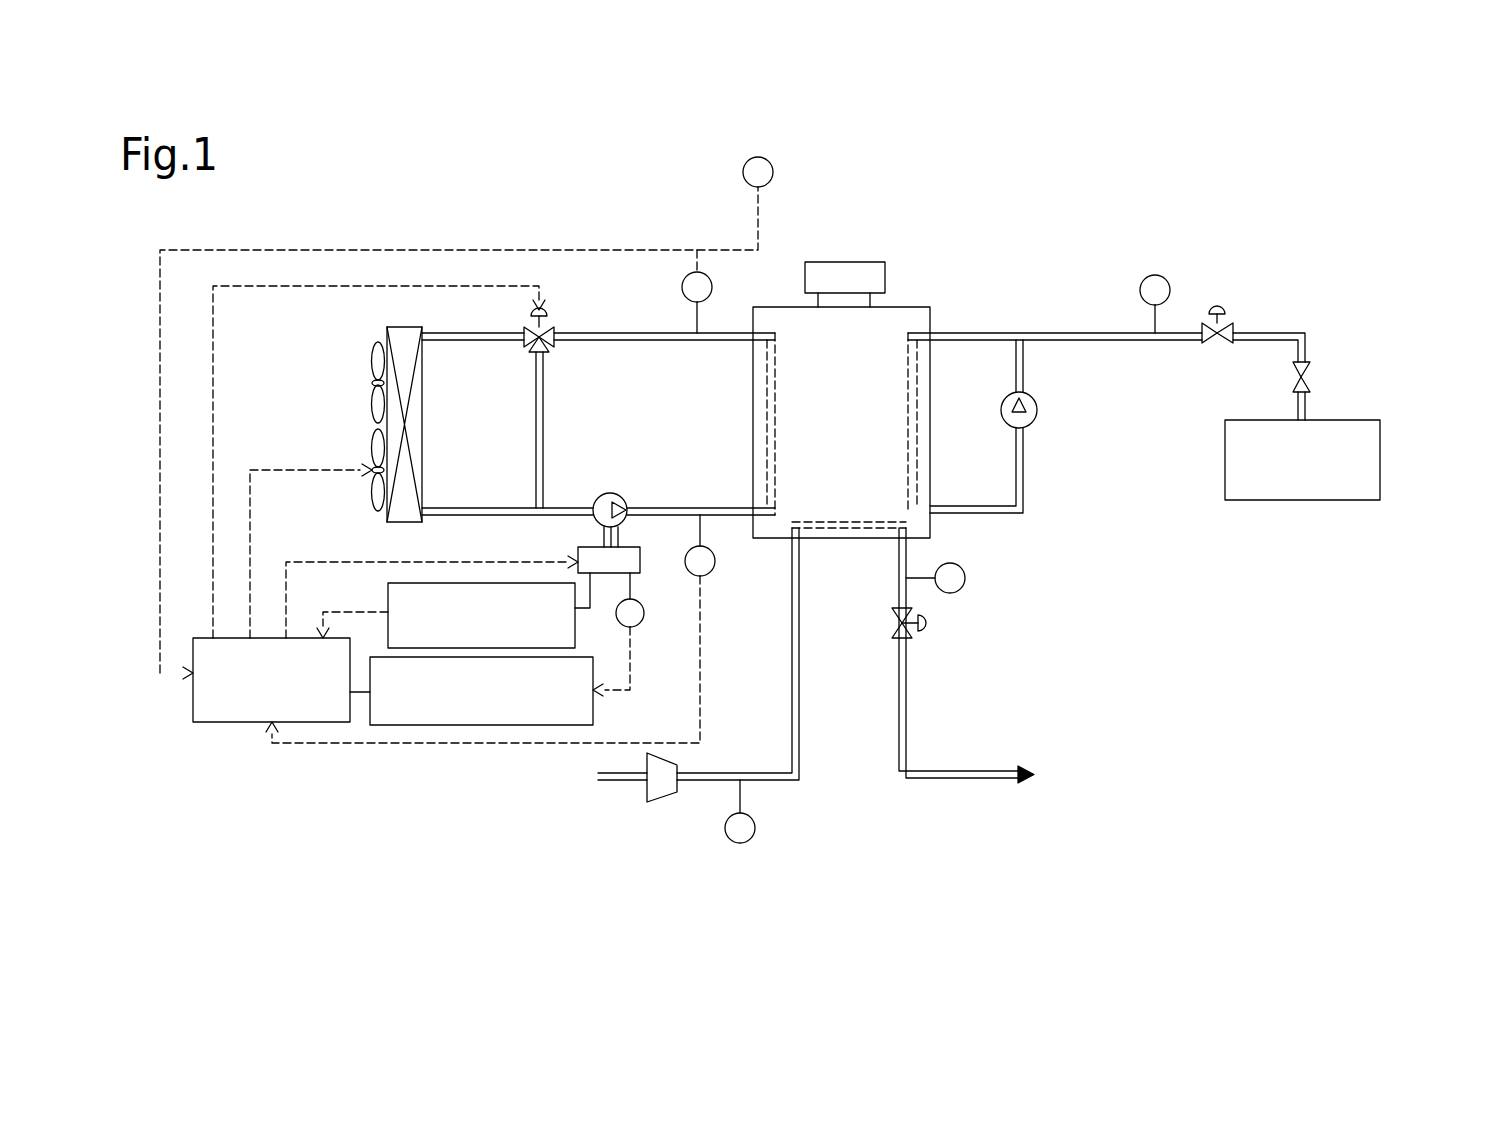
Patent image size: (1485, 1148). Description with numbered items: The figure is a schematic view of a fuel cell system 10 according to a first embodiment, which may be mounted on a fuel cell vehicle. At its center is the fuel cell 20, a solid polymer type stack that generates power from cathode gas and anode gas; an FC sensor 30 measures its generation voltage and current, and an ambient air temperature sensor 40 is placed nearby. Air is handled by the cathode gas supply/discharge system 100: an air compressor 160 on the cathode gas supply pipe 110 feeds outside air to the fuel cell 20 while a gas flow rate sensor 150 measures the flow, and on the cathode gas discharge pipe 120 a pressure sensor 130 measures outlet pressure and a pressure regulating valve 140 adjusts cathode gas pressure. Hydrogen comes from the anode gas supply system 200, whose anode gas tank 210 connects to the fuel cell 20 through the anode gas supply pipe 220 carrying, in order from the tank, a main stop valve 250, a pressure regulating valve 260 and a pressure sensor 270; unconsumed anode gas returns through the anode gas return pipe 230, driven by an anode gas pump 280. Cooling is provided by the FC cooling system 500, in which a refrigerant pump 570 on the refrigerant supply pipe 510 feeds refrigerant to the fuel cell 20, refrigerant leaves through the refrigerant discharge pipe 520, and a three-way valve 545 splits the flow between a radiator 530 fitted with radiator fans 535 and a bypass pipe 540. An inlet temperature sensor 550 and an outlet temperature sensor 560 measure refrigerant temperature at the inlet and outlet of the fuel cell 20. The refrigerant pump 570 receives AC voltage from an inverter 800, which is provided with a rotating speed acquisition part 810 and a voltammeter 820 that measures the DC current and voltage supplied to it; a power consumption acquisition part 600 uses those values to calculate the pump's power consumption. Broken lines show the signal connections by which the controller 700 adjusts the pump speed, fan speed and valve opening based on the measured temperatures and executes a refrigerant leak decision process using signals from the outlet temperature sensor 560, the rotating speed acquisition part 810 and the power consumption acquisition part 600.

The fuel cell system 10 is at (1193, 168).
The fuel cell 20 is at (908, 307).
The FC sensor 30 is at (846, 262).
The ambient air temperature sensor 40 is at (773, 172).
The cathode gas supply/discharge system 100 is at (553, 840).
The cathode gas supply pipe 110 is at (748, 773).
The cathode gas discharge pipe 120 is at (975, 780).
The pressure sensor 130 is at (965, 578).
The pressure regulating valve 140 is at (922, 634).
The gas flow rate sensor 150 is at (755, 828).
The air compressor 160 is at (646, 792).
The anode gas supply system 200 is at (933, 278).
The anode gas tank 210 is at (1380, 438).
The anode gas supply pipe 220 is at (1141, 341).
The anode gas return pipe 230 is at (966, 506).
The main stop valve 250 is at (1312, 382).
The pressure regulating valve 260 is at (1220, 343).
The pressure sensor 270 is at (1140, 288).
The anode gas pump 280 is at (1033, 398).
The FC cooling system 500 is at (373, 243).
The refrigerant supply pipe 510 is at (663, 507).
The refrigerant discharge pipe 520 is at (653, 341).
The radiator 530 is at (422, 430).
The radiator fans 535 is at (372, 383).
The bypass pipe 540 is at (545, 415).
The three-way valve 545 is at (548, 329).
The inlet temperature sensor 550 is at (715, 561).
The outlet temperature sensor 560 is at (712, 287).
The refrigerant pump 570 is at (609, 493).
The power consumption acquisition part 600 is at (593, 712).
The controller 700 is at (193, 702).
The inverter 800 is at (580, 547).
The rotating speed acquisition part 810 is at (388, 592).
The voltammeter 820 is at (642, 621).